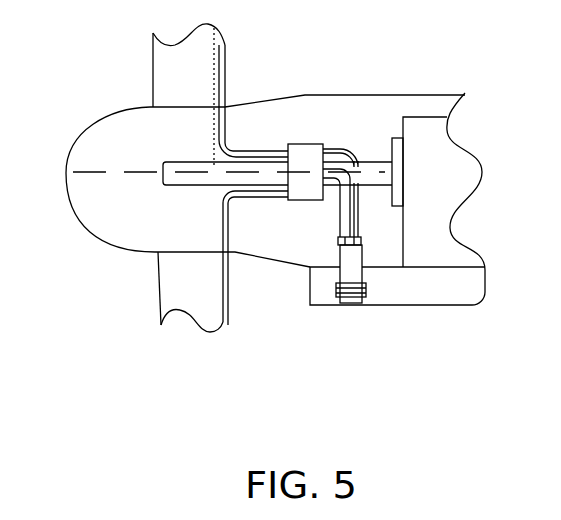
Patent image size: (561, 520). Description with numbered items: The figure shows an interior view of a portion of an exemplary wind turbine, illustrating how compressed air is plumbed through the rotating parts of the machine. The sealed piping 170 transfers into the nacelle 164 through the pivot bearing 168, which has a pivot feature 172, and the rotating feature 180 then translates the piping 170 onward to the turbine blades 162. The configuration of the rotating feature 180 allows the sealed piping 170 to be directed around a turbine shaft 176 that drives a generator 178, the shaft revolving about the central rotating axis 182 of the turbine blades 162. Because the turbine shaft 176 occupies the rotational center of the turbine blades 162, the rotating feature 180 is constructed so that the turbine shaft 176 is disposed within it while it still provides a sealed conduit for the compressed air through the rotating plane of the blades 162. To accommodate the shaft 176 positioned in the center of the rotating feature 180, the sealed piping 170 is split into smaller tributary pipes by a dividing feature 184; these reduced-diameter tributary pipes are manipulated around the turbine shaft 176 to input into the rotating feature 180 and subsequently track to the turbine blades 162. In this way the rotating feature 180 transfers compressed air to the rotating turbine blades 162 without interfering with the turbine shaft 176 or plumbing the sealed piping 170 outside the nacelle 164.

The turbine blades 162 is at (153, 49).
The nacelle 164 is at (453, 93).
The pivot bearing 168 is at (309, 286).
The sealed piping 170 is at (337, 303).
The pivot feature 172 is at (380, 293).
The turbine shaft 176 is at (368, 158).
The generator 178 is at (444, 255).
The rotating feature 180 is at (307, 126).
The central rotating axis 182 is at (56, 174).
The dividing feature 184 is at (326, 243).